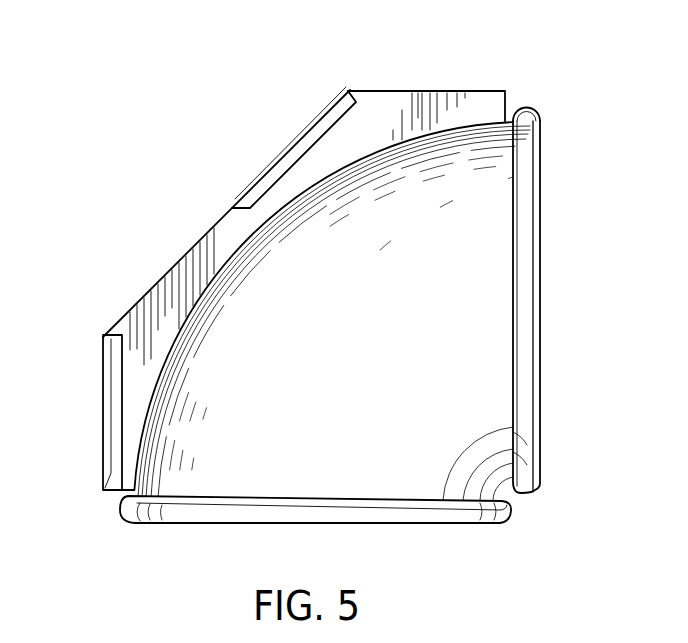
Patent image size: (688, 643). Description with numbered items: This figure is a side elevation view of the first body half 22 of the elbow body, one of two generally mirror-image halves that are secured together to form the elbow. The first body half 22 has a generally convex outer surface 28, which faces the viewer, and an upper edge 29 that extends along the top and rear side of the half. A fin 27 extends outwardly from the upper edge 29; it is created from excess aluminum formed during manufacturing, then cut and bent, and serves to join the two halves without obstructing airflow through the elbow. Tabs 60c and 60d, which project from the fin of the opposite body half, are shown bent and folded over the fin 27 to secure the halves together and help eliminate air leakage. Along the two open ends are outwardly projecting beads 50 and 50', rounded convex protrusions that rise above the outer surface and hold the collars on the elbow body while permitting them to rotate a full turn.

The first body half 22 is at (368, 332).
The fin 27 is at (377, 114).
The outer surface 28 is at (452, 392).
The upper edge 29 is at (221, 272).
The bead 50 is at (561, 301).
The bead 50' is at (315, 546).
The tab 60c is at (265, 186).
The tab 60d is at (112, 402).